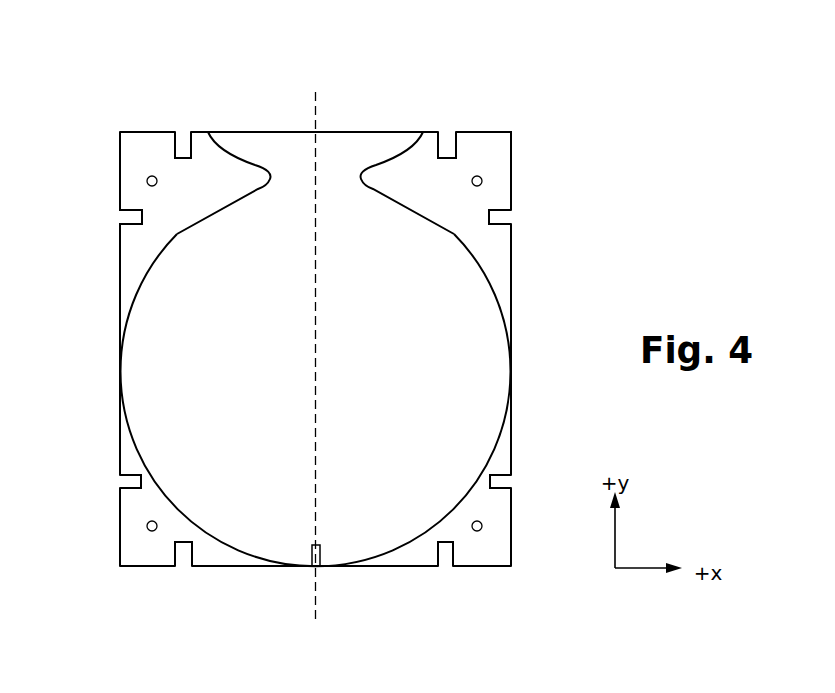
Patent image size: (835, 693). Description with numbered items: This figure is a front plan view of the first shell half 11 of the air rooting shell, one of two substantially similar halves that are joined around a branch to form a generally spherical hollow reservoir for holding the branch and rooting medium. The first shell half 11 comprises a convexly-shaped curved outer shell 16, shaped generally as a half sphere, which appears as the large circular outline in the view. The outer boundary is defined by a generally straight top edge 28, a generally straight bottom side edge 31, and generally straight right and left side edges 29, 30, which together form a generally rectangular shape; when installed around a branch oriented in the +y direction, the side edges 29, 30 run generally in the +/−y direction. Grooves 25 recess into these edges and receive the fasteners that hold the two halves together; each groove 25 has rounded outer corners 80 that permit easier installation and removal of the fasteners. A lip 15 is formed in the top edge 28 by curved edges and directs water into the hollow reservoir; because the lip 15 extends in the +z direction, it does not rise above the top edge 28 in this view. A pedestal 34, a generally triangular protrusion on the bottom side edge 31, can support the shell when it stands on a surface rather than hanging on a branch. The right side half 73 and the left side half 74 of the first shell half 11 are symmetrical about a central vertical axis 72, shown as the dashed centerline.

The first shell half 11 is at (550, 108).
The lip 15 is at (391, 131).
The curved outer shell 16 is at (369, 403).
The grooves 25 is at (186, 137).
The top edge 28 is at (495, 131).
The right side edge 29 is at (513, 437).
The left side edge 30 is at (122, 403).
The bottom side edge 31 is at (411, 569).
The pedestal 34 is at (321, 553).
The central vertical axis 72 is at (318, 98).
The right side half 73 is at (503, 265).
The left side half 74 is at (132, 275).
The rounded outer corners 80 is at (120, 210).